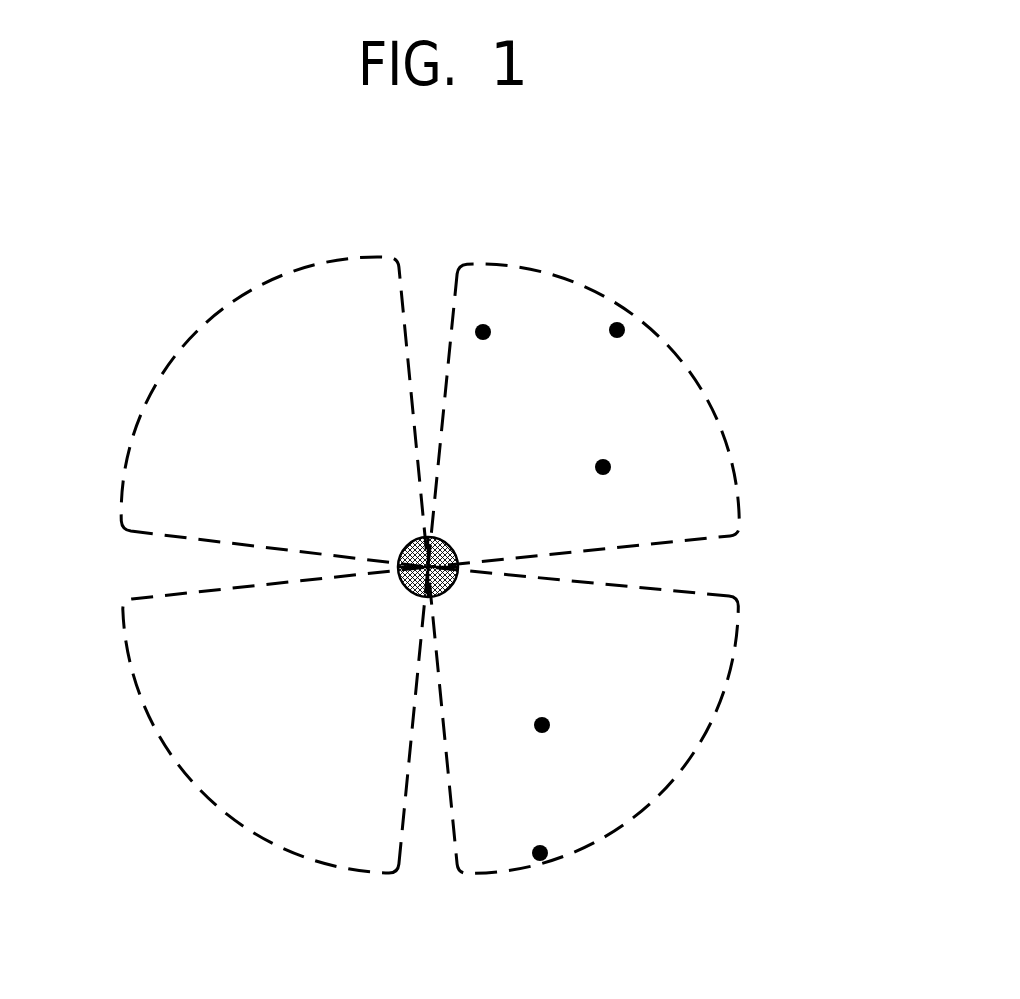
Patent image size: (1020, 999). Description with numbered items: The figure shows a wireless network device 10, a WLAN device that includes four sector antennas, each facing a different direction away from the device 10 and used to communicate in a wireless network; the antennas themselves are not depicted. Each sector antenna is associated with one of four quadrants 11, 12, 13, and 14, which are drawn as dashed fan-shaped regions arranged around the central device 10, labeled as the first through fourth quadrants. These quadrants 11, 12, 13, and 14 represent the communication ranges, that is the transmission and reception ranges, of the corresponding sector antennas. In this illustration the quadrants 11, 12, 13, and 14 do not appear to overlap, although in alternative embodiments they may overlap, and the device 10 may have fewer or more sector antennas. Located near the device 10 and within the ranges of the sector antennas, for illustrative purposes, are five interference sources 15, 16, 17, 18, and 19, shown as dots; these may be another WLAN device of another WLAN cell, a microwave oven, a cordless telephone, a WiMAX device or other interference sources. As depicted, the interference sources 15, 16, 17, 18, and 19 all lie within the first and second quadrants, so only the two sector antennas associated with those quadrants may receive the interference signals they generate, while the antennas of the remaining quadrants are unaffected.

The wireless device 10 is at (458, 564).
The quadrant 11 is at (180, 348).
The quadrant 12 is at (737, 475).
The quadrant 13 is at (730, 690).
The quadrant 14 is at (168, 742).
The interference source 15 is at (483, 332).
The interference source 16 is at (617, 330).
The interference source 17 is at (603, 467).
The interference source 18 is at (542, 725).
The interference source 19 is at (540, 853).